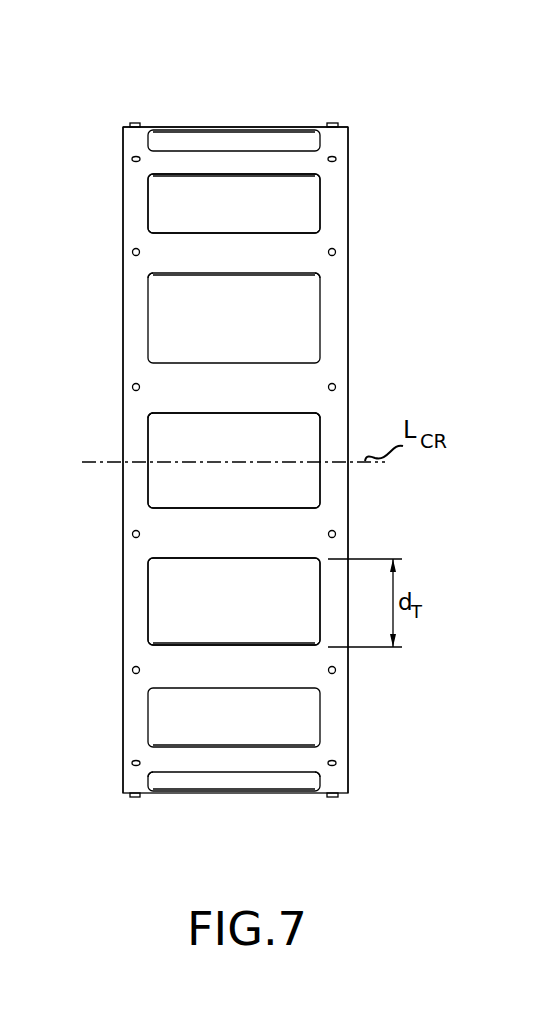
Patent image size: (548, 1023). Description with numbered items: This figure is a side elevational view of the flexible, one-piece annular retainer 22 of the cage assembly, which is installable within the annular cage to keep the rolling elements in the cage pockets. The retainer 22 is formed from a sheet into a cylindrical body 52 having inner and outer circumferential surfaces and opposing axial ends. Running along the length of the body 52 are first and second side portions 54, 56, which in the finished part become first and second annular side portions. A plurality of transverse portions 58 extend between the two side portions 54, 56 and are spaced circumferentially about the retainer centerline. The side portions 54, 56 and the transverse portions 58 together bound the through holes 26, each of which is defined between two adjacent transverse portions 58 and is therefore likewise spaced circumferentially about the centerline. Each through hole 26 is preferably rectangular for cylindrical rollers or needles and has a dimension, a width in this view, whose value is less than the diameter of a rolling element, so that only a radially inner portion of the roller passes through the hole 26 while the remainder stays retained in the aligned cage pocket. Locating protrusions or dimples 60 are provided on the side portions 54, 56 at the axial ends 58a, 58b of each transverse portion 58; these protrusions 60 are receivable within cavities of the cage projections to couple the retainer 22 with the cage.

The annular retainer 22 is at (204, 88).
The through holes 26 is at (271, 203).
The cylindrical body 52 is at (362, 302).
The first side portion 54 is at (343, 360).
The second side portion 56 is at (118, 352).
The transverse portions 58 is at (264, 148).
The first axial end of transverse portion 58a is at (305, 396).
The second axial end of transverse portion 58b is at (155, 397).
The locating protrusions 60 is at (133, 252).